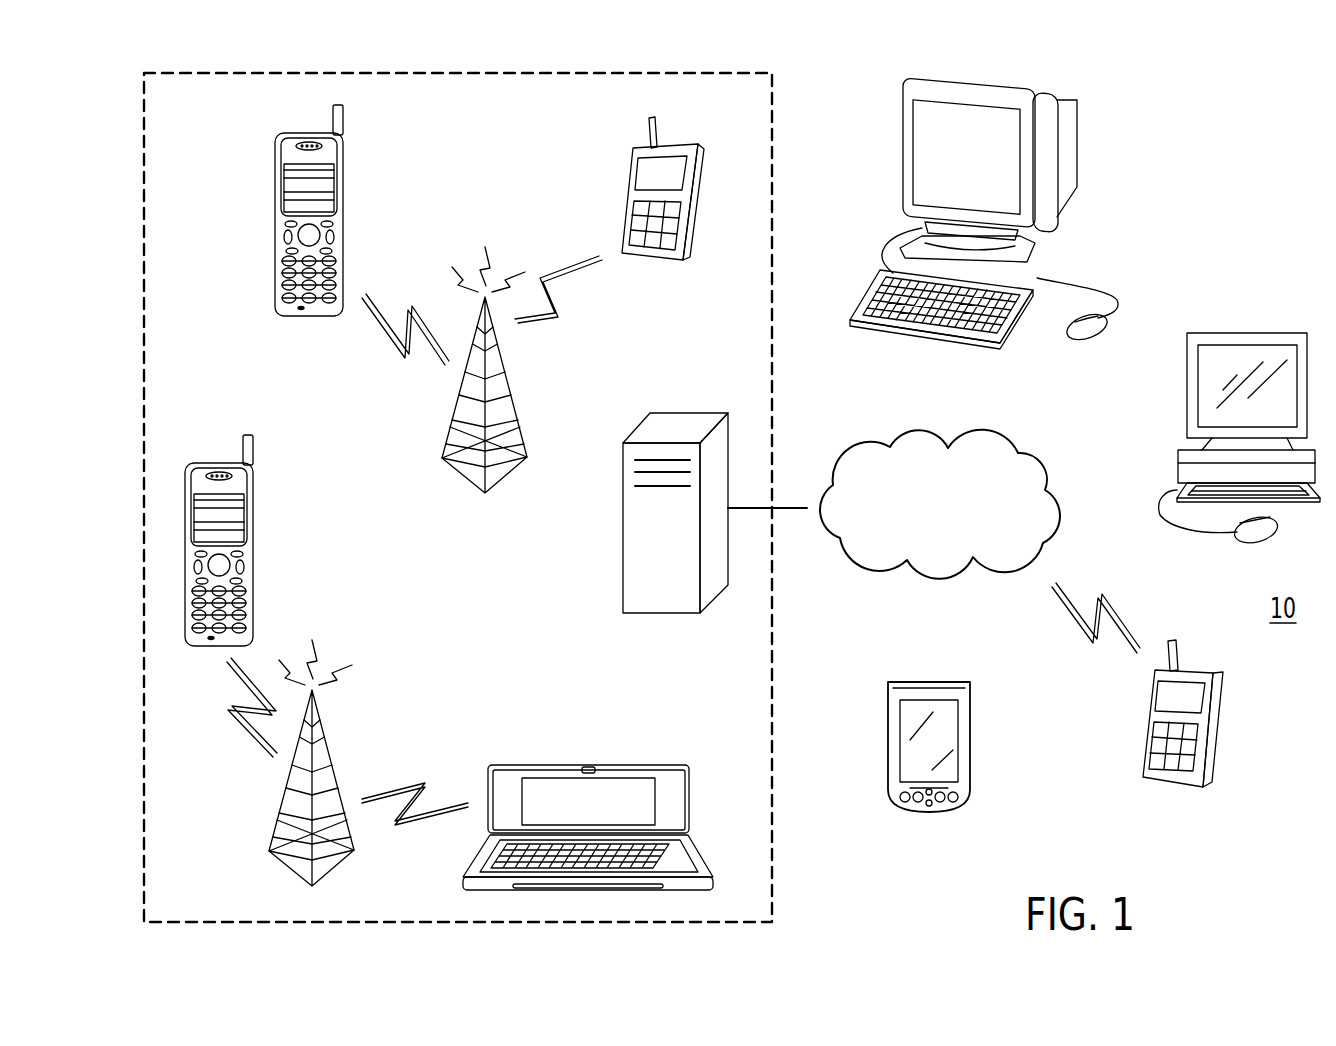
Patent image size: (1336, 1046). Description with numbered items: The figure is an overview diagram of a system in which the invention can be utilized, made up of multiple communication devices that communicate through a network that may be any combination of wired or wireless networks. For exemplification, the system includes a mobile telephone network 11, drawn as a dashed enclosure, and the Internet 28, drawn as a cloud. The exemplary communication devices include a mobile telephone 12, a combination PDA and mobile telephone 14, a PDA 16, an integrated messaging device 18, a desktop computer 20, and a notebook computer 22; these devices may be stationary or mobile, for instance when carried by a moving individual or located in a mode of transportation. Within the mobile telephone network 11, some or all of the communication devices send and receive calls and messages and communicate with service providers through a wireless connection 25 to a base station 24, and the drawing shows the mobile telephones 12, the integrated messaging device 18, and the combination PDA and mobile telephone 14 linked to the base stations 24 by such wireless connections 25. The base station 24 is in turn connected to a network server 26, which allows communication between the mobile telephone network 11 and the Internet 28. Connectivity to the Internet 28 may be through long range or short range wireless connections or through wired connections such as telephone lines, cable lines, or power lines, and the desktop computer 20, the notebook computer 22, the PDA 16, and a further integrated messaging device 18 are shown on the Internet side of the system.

The mobile telephone network 11 is at (193, 124).
The mobile telephone 12 is at (345, 225).
The combination PDA and mobile telephone 14 is at (590, 765).
The PDA 16 is at (970, 742).
The integrated messaging device 18 is at (627, 198).
The desktop computer 20 is at (1078, 138).
The notebook computer 22 is at (1247, 333).
The base station 24 is at (507, 378).
The wireless connection 25 is at (1115, 620).
The network server 26 is at (623, 527).
The Internet 28 is at (987, 428).